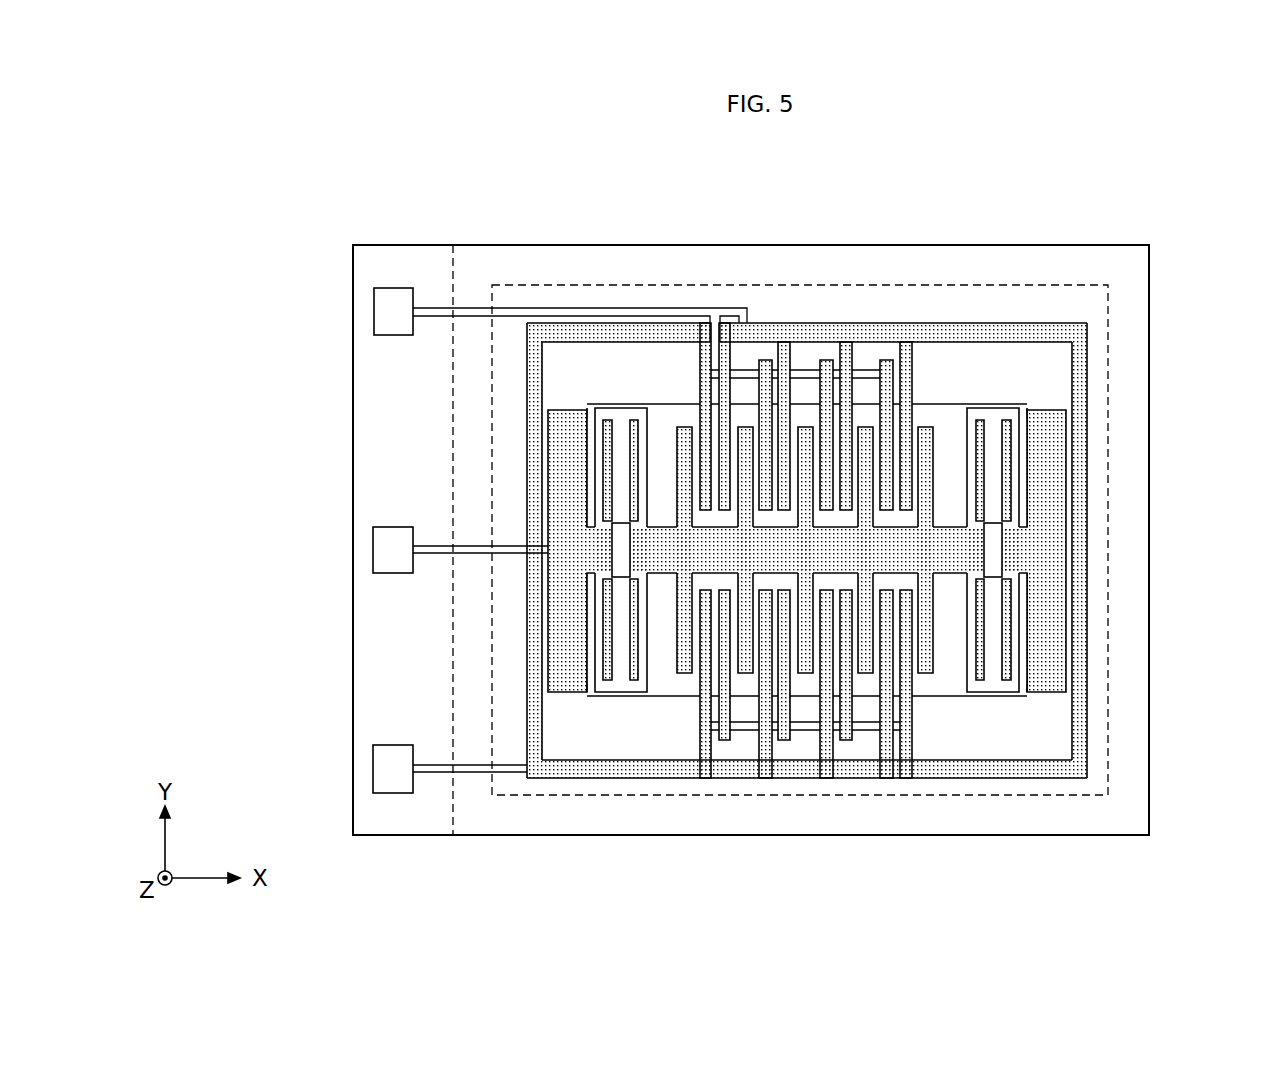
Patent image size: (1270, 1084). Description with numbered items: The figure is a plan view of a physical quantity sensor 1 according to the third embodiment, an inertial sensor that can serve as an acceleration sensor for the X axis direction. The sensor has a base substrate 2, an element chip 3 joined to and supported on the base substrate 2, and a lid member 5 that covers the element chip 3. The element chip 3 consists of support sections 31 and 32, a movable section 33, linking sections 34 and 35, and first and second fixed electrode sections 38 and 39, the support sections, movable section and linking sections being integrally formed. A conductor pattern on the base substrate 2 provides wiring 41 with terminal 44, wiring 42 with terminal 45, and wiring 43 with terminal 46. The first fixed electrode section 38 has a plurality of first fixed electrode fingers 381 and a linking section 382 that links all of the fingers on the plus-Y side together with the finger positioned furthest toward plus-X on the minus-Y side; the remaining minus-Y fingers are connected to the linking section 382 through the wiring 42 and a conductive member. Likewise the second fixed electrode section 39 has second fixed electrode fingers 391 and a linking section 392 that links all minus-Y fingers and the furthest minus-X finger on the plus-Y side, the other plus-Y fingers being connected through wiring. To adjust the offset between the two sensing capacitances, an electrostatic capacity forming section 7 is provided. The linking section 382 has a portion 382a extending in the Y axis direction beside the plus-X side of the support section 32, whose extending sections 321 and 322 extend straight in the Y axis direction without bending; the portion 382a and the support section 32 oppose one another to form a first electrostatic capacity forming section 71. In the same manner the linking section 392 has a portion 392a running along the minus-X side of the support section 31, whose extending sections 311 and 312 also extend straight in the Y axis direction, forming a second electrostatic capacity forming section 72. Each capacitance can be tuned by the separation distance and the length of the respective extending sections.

The physical quantity sensor 1 is at (1198, 240).
The base substrate 2 is at (1150, 765).
The element chip 3 is at (755, 468).
The lid member 5 is at (1130, 727).
The electrostatic capacity forming section 7 is at (769, 546).
The support section 31 is at (443, 550).
The support section 32 is at (1119, 548).
The movable section 33 is at (663, 567).
The linking section 34 is at (605, 404).
The linking section 35 is at (1003, 404).
The first fixed electrode section 38 is at (873, 490).
The second fixed electrode section 39 is at (687, 613).
The wiring 41 is at (472, 556).
The wiring 42 is at (520, 310).
The wiring 43 is at (865, 376).
The terminal 44 is at (383, 553).
The terminal 45 is at (383, 310).
The terminal 46 is at (383, 770).
The first electrostatic capacity forming section 71 is at (1068, 470).
The second electrostatic capacity forming section 72 is at (545, 610).
The extending section 311 is at (567, 427).
The extending section 312 is at (567, 672).
The extending section 321 is at (1053, 427).
The extending section 322 is at (1050, 665).
The first fixed electrode finger 381 is at (725, 352).
The linking section 382 is at (1047, 335).
The portion 382a is at (1080, 597).
The second fixed electrode finger 391 is at (703, 352).
The linking section 392 is at (600, 770).
The portion 392a is at (535, 470).